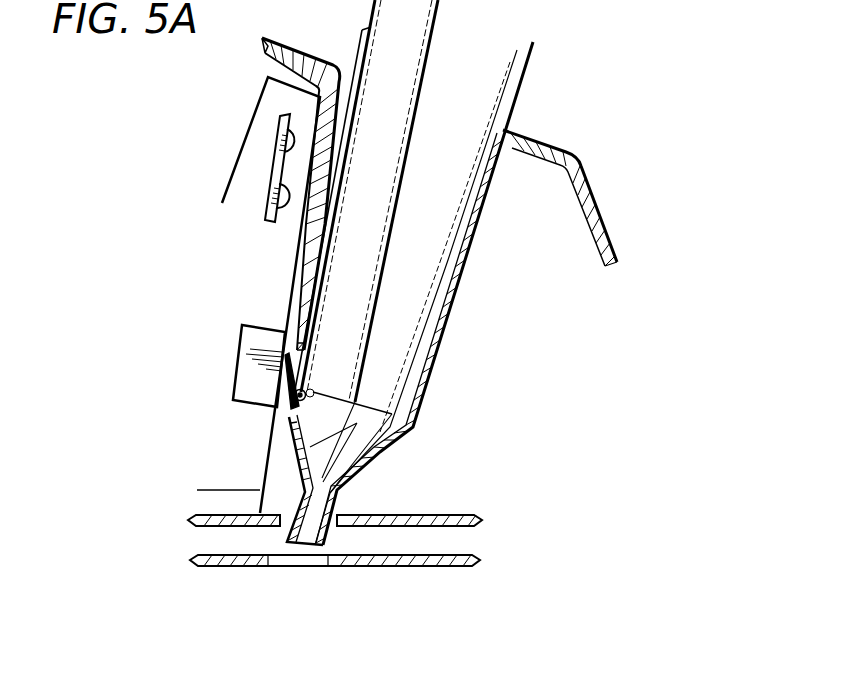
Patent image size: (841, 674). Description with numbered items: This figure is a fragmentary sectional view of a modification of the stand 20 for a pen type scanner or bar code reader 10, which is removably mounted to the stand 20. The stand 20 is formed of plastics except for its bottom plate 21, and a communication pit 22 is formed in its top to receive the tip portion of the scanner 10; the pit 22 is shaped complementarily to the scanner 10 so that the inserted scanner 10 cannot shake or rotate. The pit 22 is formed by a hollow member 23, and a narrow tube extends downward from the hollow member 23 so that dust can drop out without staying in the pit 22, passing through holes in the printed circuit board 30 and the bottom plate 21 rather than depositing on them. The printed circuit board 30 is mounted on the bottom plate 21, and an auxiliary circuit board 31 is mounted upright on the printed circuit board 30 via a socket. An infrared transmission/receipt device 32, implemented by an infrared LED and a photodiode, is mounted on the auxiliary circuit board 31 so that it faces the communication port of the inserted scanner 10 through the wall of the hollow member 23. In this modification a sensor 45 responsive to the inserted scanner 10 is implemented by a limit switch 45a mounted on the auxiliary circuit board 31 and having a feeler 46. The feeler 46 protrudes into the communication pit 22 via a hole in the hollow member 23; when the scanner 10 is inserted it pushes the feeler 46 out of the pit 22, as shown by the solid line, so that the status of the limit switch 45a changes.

The pen type scanner 10 is at (516, 100).
The stand 20 is at (599, 194).
The bottom plate 21 is at (372, 567).
The communication pit 22 is at (343, 110).
The hollow member 23 is at (456, 318).
The printed circuit board 30 is at (412, 515).
The auxiliary circuit board 31 is at (243, 175).
The infrared transmission/receipt device 32 is at (272, 186).
The sensor 45 is at (232, 408).
The limit switch 45a is at (245, 380).
The feeler 46 is at (305, 389).